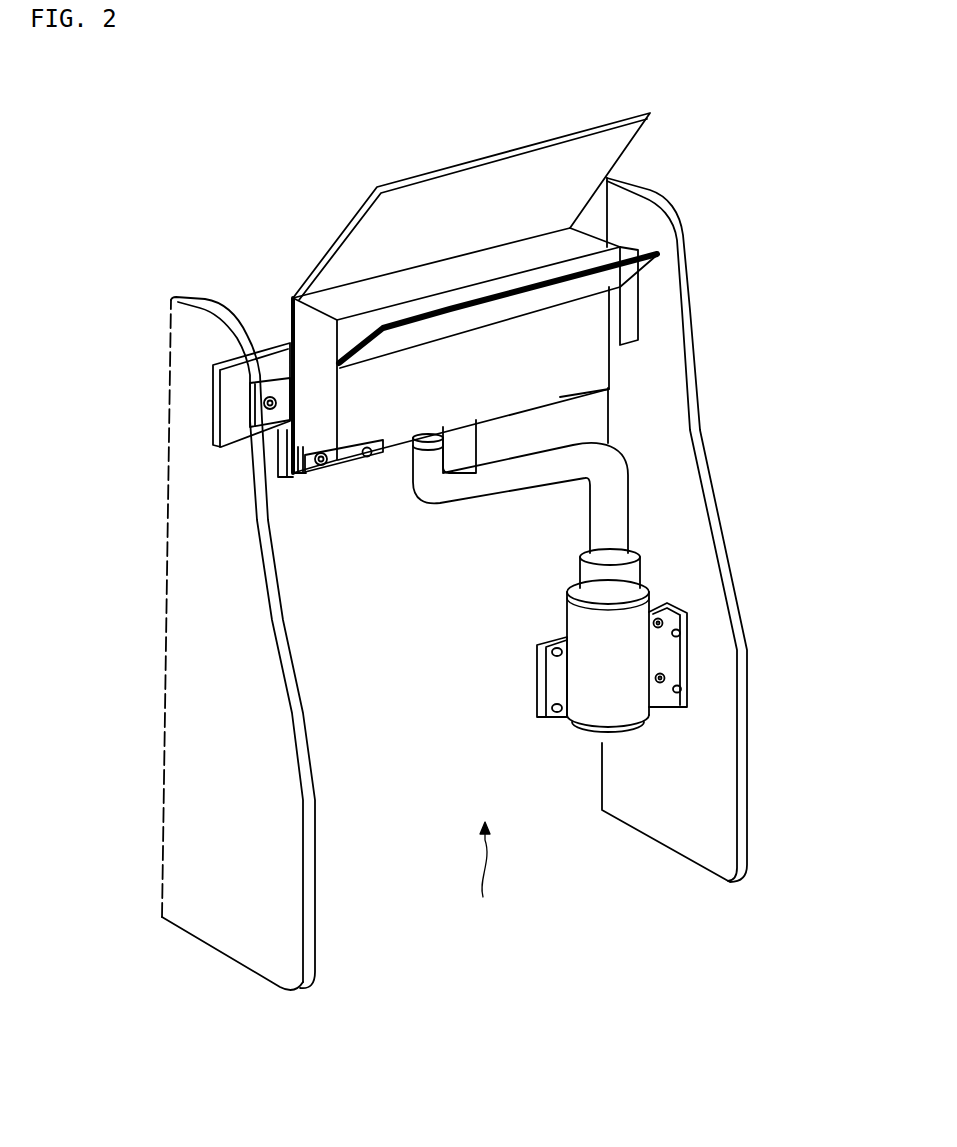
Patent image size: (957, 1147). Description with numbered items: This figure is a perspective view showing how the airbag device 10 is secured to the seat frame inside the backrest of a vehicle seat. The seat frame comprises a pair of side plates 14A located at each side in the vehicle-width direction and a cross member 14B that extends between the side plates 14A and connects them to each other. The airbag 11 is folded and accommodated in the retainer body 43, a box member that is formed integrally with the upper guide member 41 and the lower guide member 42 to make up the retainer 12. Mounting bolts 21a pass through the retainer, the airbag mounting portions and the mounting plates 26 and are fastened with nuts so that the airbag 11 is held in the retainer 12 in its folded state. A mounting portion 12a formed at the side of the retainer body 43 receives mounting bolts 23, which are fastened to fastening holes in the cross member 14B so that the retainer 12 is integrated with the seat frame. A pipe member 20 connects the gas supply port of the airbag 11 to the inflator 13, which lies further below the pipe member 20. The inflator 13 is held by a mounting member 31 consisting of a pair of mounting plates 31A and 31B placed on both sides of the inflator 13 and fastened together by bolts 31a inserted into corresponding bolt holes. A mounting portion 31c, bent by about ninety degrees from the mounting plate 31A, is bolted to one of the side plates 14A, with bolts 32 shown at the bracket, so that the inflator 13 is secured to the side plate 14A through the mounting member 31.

The airbag device 10 is at (485, 872).
The airbag 11 is at (448, 288).
The retainer 12 is at (600, 362).
The mounting portion 12a is at (274, 437).
The inflator 13 is at (636, 620).
The side plates 14A is at (163, 843).
The cross member 14B is at (263, 350).
The pipe member 20 is at (462, 505).
The mounting bolts 21a is at (375, 460).
The mounting bolts 23 is at (278, 403).
The mounting plates 26 is at (300, 477).
The mounting member 31 is at (610, 679).
The mounting plate 31A is at (537, 658).
The mounting plate 31B is at (560, 690).
The bolts 31a is at (555, 646).
The mounting portion 31c is at (668, 713).
The bolts 32 is at (665, 623).
The upper guide member 41 is at (413, 174).
The lower guide member 42 is at (657, 254).
The retainer body 43 is at (587, 392).